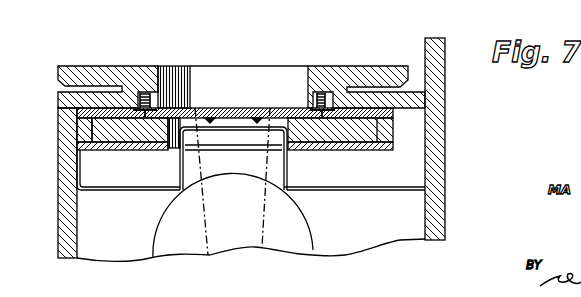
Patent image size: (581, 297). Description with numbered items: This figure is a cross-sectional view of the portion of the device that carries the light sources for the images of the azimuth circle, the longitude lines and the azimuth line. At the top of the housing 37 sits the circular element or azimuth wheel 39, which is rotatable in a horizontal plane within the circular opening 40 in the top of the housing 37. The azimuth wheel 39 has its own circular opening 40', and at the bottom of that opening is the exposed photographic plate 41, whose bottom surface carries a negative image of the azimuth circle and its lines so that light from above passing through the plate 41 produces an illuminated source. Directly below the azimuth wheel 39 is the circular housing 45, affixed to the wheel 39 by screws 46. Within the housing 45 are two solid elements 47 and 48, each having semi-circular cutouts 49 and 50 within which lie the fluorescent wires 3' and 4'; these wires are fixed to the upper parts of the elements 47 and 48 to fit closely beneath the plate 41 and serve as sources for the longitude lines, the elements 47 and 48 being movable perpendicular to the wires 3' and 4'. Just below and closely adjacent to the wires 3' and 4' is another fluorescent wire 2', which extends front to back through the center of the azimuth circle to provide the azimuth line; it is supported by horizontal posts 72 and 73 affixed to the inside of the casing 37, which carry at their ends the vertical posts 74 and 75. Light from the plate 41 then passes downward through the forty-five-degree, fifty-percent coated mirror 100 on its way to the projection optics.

The housing 37 is at (58, 135).
The azimuth wheel 39 is at (348, 68).
The circular opening 40 is at (124, 93).
The circular opening 40' is at (249, 61).
The photographic plate 41 is at (237, 113).
The screws 46 is at (153, 98).
The fluorescent wire 3' is at (205, 171).
The fluorescent wire 4' is at (262, 167).
The solid element 48 is at (97, 150).
The circular housing 45 is at (110, 150).
The semi-circular cutout 50 is at (158, 147).
The solid element 47 is at (349, 144).
The semi-circular cutout 49 is at (288, 158).
The vertical post 74 is at (178, 166).
The vertical post 75 is at (288, 172).
The fluorescent wire 2' is at (233, 158).
The horizontal post 72 is at (117, 192).
The horizontal post 73 is at (360, 192).
The 45° mirror 100 is at (190, 249).